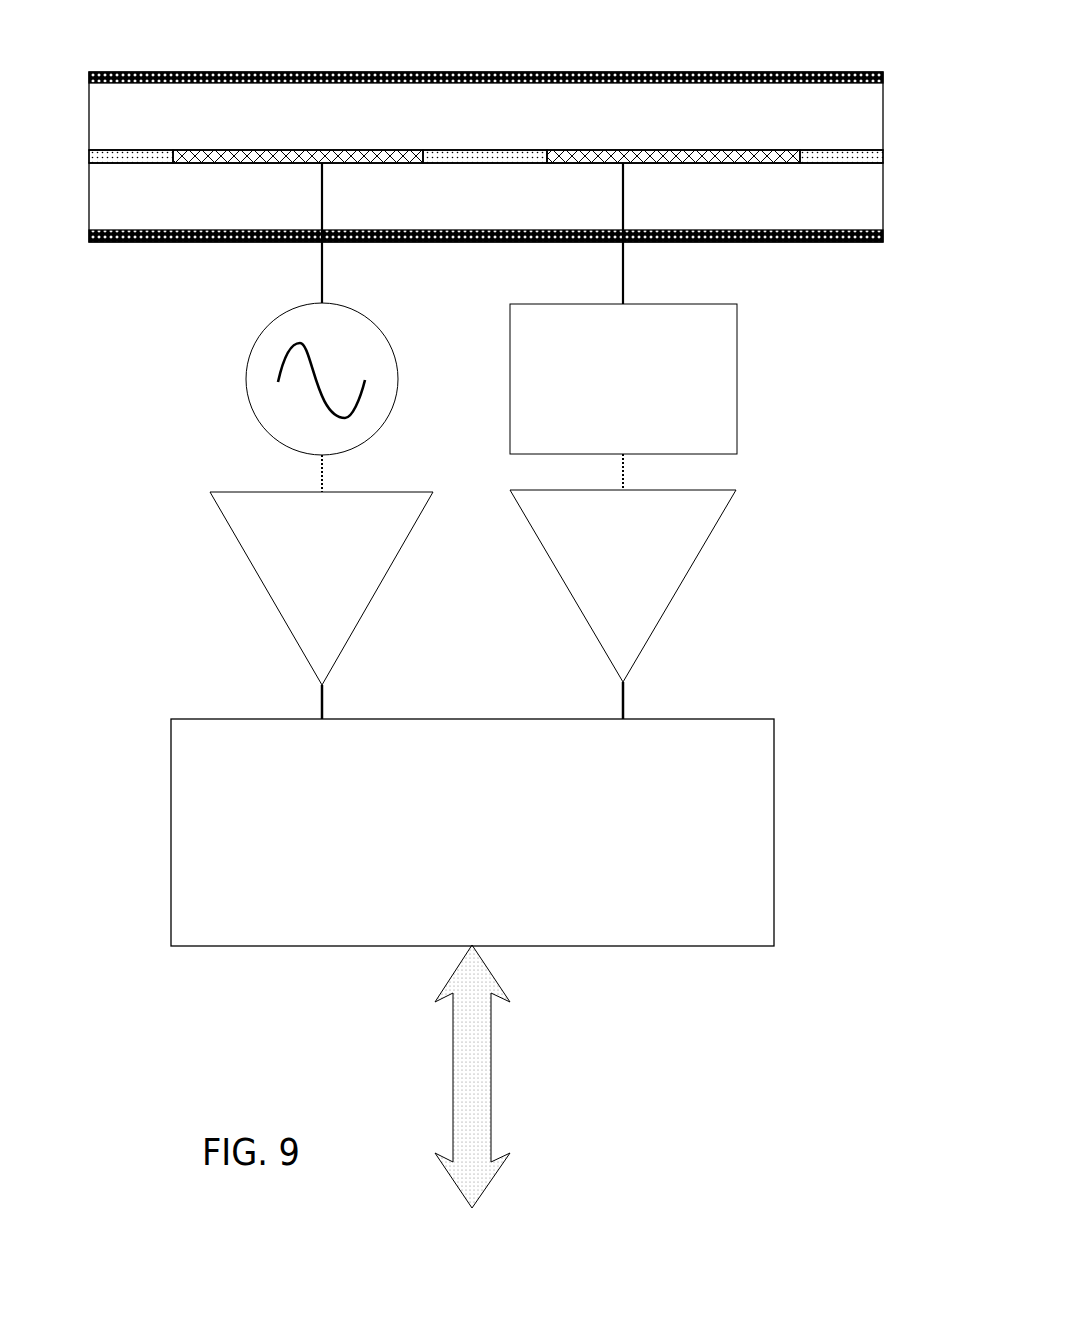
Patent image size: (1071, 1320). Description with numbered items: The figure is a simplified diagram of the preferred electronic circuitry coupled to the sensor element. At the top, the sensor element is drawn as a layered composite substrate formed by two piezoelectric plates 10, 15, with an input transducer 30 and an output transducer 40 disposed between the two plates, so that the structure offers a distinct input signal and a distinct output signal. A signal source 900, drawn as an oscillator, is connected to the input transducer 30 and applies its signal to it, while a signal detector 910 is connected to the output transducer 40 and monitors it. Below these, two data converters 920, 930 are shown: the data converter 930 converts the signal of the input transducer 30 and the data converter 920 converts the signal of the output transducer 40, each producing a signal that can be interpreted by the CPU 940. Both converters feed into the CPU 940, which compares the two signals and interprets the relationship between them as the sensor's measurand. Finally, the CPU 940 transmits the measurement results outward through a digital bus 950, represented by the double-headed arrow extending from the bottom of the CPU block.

The piezoelectric plate 10 is at (89, 118).
The piezoelectric plate 15 is at (89, 212).
The input transducer 30 is at (173, 153).
The output transducer 40 is at (800, 153).
The signal source 900 is at (265, 397).
The signal detector 910 is at (671, 397).
The data converter 920 is at (671, 604).
The data converter 930 is at (301, 605).
The CPU 940 is at (560, 832).
The digital bus 950 is at (605, 1076).